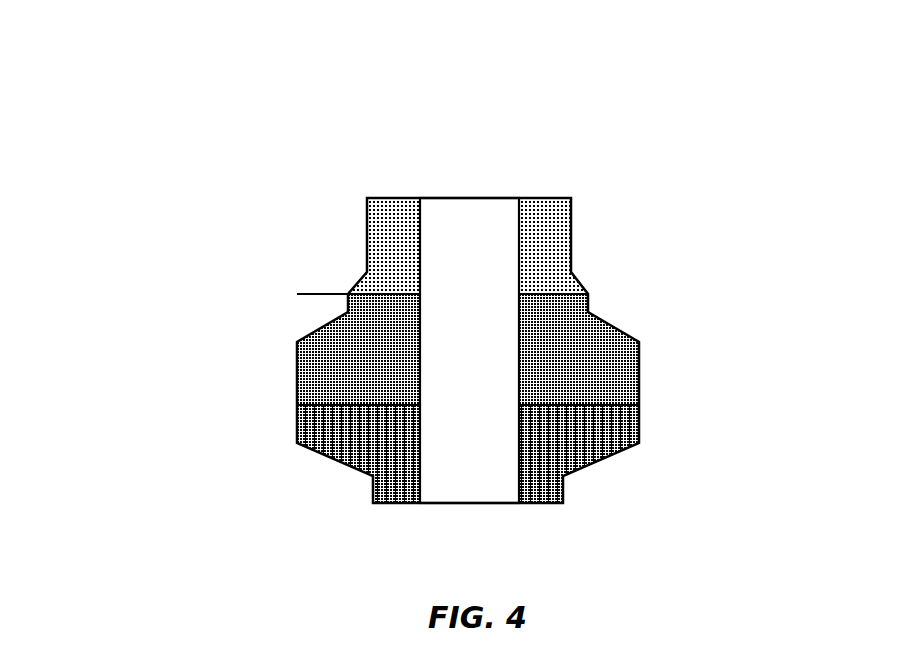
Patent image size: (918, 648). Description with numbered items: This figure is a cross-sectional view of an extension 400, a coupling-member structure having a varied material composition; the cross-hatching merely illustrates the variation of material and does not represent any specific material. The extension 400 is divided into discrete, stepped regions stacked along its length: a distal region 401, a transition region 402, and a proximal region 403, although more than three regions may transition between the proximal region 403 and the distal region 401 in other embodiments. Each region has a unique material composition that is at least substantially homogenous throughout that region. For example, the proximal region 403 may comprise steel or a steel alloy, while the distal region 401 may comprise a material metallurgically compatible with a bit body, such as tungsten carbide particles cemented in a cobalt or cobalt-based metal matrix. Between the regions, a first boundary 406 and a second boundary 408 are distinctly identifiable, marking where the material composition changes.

The extension 400 is at (170, 90).
The distal region 401 is at (383, 443).
The transition region 402 is at (343, 345).
The proximal region 403 is at (390, 265).
The first boundary 406 is at (570, 403).
The second boundary 408 is at (565, 293).